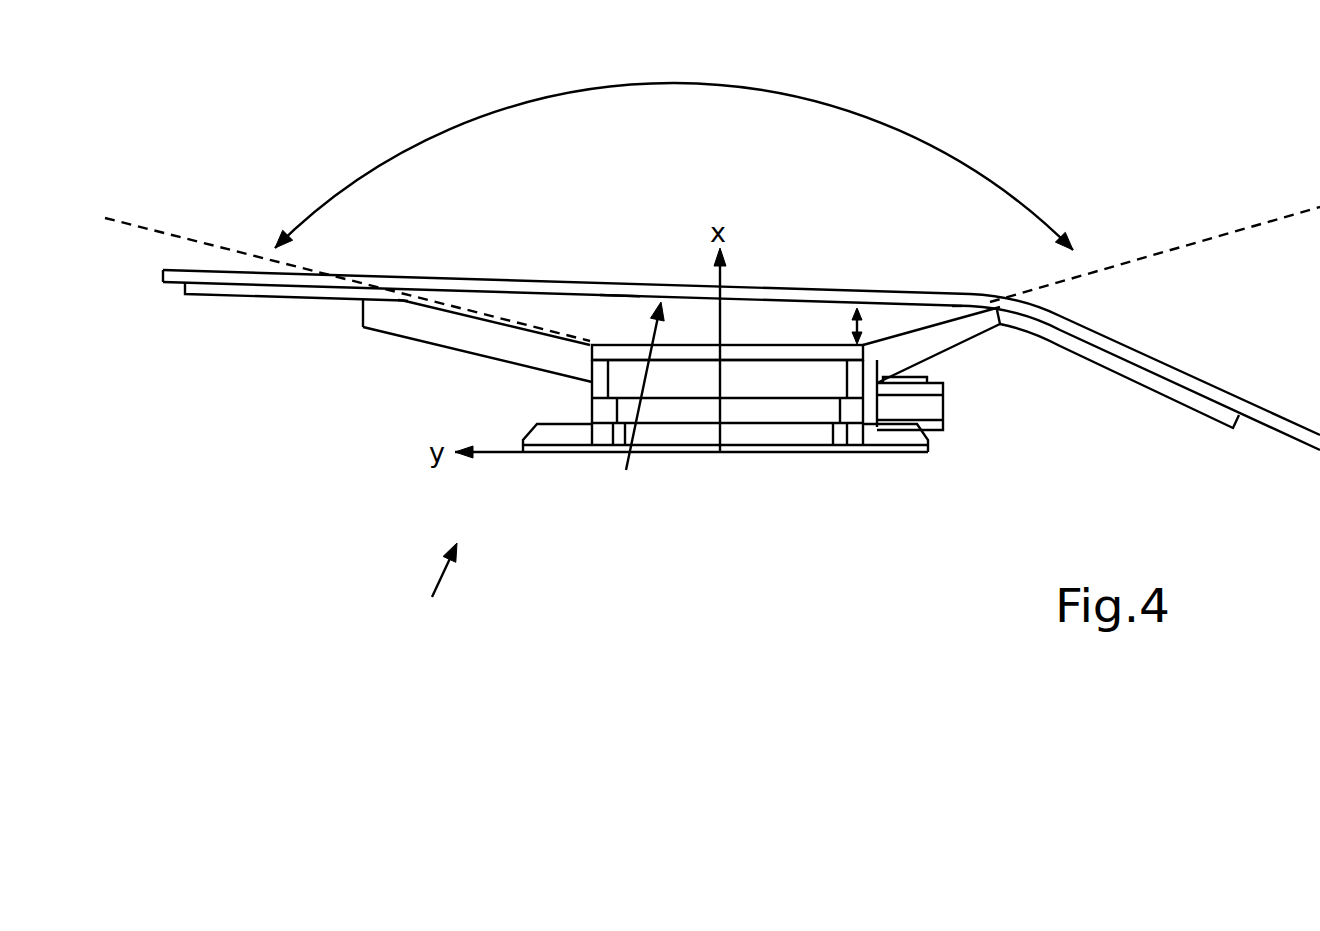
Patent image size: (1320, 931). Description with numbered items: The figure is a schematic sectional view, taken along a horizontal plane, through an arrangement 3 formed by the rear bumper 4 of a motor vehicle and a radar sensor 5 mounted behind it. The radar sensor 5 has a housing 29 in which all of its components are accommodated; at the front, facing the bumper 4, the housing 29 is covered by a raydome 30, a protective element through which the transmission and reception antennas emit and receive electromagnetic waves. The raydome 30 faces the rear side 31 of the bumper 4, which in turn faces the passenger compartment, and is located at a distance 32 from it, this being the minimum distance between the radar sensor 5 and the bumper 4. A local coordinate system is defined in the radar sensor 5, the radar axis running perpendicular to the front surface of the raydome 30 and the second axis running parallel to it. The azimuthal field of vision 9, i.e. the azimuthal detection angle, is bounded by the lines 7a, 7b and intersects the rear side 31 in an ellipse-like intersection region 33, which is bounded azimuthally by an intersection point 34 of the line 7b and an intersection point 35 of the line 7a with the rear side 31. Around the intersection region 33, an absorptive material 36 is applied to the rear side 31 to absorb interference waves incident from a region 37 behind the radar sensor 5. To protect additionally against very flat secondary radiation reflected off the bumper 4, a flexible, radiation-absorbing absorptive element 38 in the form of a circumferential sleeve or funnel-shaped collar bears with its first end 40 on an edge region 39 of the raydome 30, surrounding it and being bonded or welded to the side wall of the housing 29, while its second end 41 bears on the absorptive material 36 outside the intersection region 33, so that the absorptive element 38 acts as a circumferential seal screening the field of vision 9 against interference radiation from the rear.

The arrangement 3 is at (437, 585).
The rear bumper 4 is at (820, 290).
The first radar sensor 5 is at (798, 435).
The line 7a is at (1227, 233).
The line 7b is at (167, 233).
The azimuthal field of vision 9 is at (728, 164).
The housing 29 is at (683, 382).
The raydome 30 is at (765, 353).
The rear side 31 is at (613, 298).
The distance 32 is at (854, 323).
The intersection region 33 is at (637, 403).
The intersection point 34 is at (403, 298).
The intersection point 35 is at (957, 304).
The absorptive material 36 is at (260, 295).
The region to the rear 37 is at (588, 588).
The absorptive element 38 is at (452, 342).
The edge region 39 is at (590, 343).
The first end 40 is at (587, 363).
The second end 41 is at (366, 308).